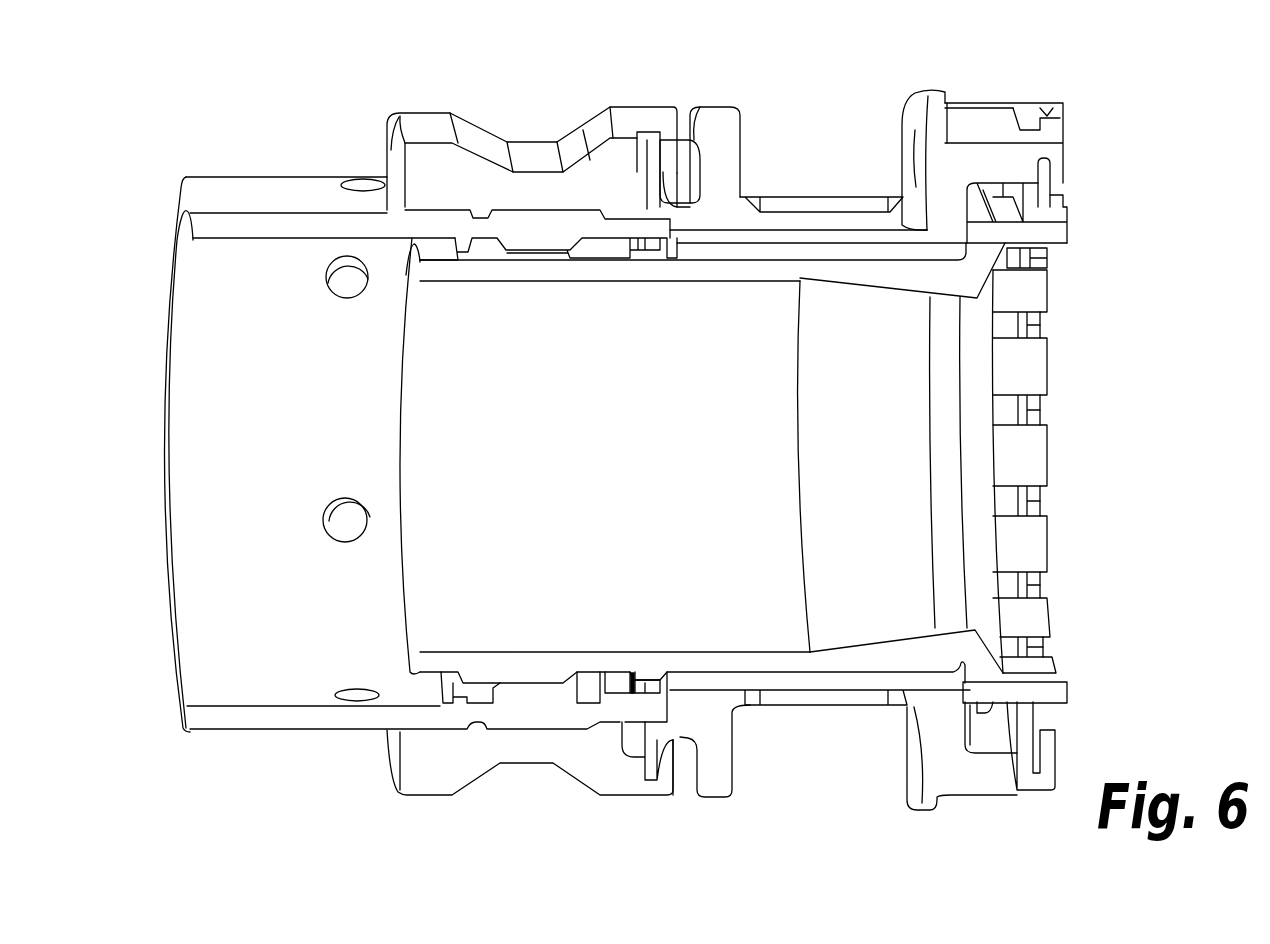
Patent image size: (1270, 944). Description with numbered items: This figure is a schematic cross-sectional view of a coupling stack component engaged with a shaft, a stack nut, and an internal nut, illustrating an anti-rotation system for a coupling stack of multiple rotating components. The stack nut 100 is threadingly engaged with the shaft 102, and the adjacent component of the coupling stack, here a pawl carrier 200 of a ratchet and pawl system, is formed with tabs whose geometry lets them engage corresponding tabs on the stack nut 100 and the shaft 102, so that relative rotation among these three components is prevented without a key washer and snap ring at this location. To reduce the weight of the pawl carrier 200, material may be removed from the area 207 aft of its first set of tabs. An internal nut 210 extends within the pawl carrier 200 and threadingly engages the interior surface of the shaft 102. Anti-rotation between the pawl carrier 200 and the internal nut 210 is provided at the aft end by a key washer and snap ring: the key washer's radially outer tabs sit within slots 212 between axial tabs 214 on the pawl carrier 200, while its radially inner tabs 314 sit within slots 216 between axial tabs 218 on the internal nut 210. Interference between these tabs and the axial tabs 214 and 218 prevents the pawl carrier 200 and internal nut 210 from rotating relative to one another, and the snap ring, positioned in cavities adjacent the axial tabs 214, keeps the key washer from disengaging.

The stack nut 100 is at (419, 112).
The shaft 102 is at (228, 177).
The pawl carrier 200 is at (922, 90).
The area aft of the tabs 207 is at (678, 108).
The internal nut 210 is at (752, 493).
The slots 212 is at (1038, 112).
The axial tabs 214 is at (1062, 135).
The slots 216 is at (1050, 321).
The axial tabs 218 is at (1047, 367).
The radially inner tabs 314 is at (1012, 500).